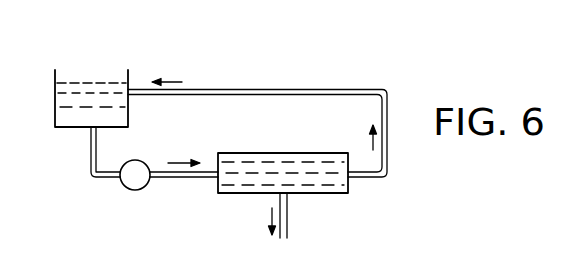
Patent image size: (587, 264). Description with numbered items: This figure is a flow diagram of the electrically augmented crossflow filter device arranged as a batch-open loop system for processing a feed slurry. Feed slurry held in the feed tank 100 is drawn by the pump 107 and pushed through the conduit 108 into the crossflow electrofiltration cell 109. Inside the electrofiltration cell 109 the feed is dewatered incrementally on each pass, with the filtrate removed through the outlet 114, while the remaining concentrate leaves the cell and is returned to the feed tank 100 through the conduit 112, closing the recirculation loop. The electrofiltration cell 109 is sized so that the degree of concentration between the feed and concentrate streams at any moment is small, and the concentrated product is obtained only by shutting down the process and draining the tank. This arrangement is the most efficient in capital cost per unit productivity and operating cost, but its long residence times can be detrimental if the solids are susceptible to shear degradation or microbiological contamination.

The feed tank 100 is at (54, 83).
The pump 107 is at (138, 190).
The conduit 108 is at (108, 171).
The crossflow electrofiltration cell 109 is at (273, 153).
The conduit 112 is at (330, 90).
The outlet 114 is at (288, 220).